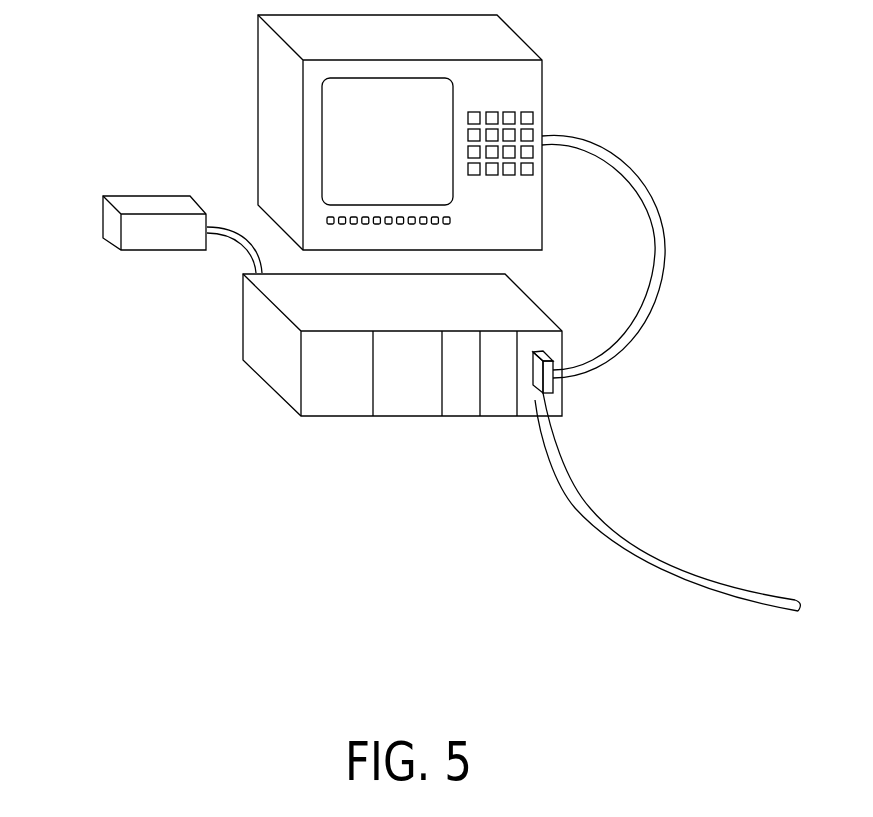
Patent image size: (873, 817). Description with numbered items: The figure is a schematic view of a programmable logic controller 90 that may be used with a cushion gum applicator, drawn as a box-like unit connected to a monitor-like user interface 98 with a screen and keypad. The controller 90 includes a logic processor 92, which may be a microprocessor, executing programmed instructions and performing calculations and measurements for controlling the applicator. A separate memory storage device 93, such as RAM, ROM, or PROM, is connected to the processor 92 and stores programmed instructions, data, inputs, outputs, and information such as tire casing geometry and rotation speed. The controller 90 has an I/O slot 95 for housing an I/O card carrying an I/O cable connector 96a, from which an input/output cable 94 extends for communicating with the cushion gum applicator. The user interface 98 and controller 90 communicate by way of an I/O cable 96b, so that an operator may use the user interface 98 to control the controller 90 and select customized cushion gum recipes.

The programmable logic controller 90 is at (203, 430).
The logic processor 92 is at (250, 338).
The memory storage device 93 is at (113, 230).
The input/output cable 94 is at (647, 567).
The I/O slot 95 is at (392, 412).
The I/O cable connector 96a is at (535, 373).
The I/O cable 96b is at (660, 247).
The user interface 98 is at (535, 47).